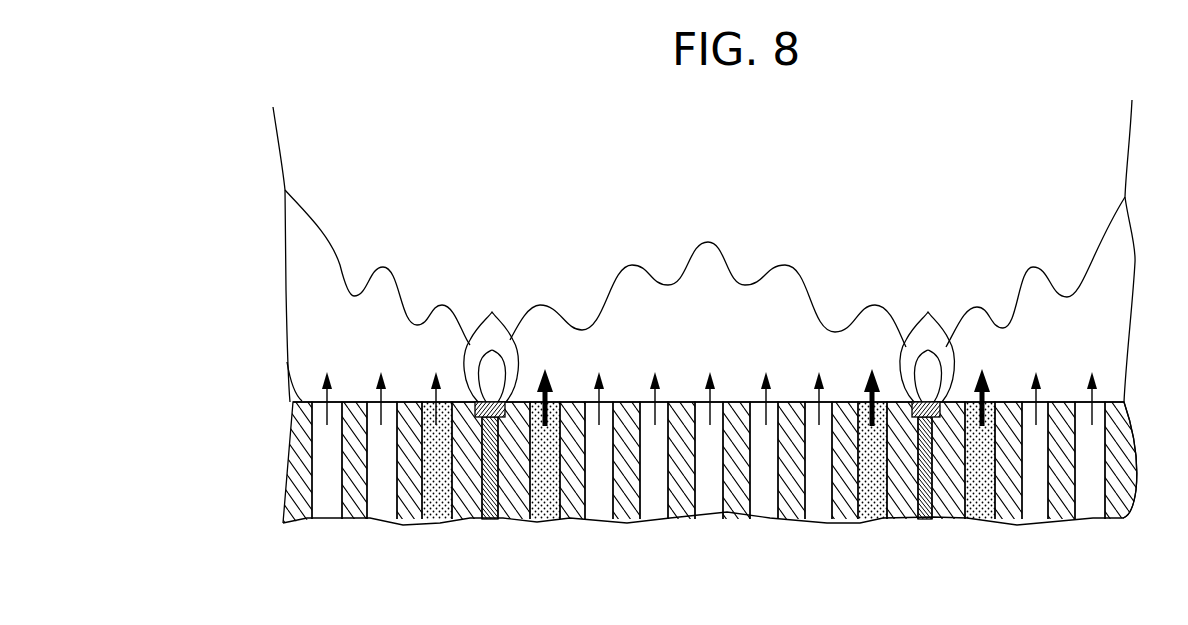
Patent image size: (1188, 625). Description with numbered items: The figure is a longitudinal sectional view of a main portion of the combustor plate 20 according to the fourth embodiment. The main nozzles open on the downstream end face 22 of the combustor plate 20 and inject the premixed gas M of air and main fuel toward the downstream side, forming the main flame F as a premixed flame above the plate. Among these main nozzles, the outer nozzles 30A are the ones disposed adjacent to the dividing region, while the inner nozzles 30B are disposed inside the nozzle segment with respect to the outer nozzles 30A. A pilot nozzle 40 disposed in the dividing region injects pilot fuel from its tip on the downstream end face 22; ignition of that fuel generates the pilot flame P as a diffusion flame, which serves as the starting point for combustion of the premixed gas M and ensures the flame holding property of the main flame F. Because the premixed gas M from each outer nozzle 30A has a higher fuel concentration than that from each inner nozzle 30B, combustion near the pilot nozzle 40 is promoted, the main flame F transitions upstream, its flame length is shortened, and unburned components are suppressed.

The combustor plate 20 is at (290, 407).
The downstream end face 22 is at (286, 364).
The outer nozzle 30A is at (433, 498).
The inner nozzle 30B is at (323, 498).
The pilot nozzle 40 is at (486, 498).
The main flame F is at (335, 257).
The premixed gas M is at (938, 322).
The pilot flame P is at (494, 310).